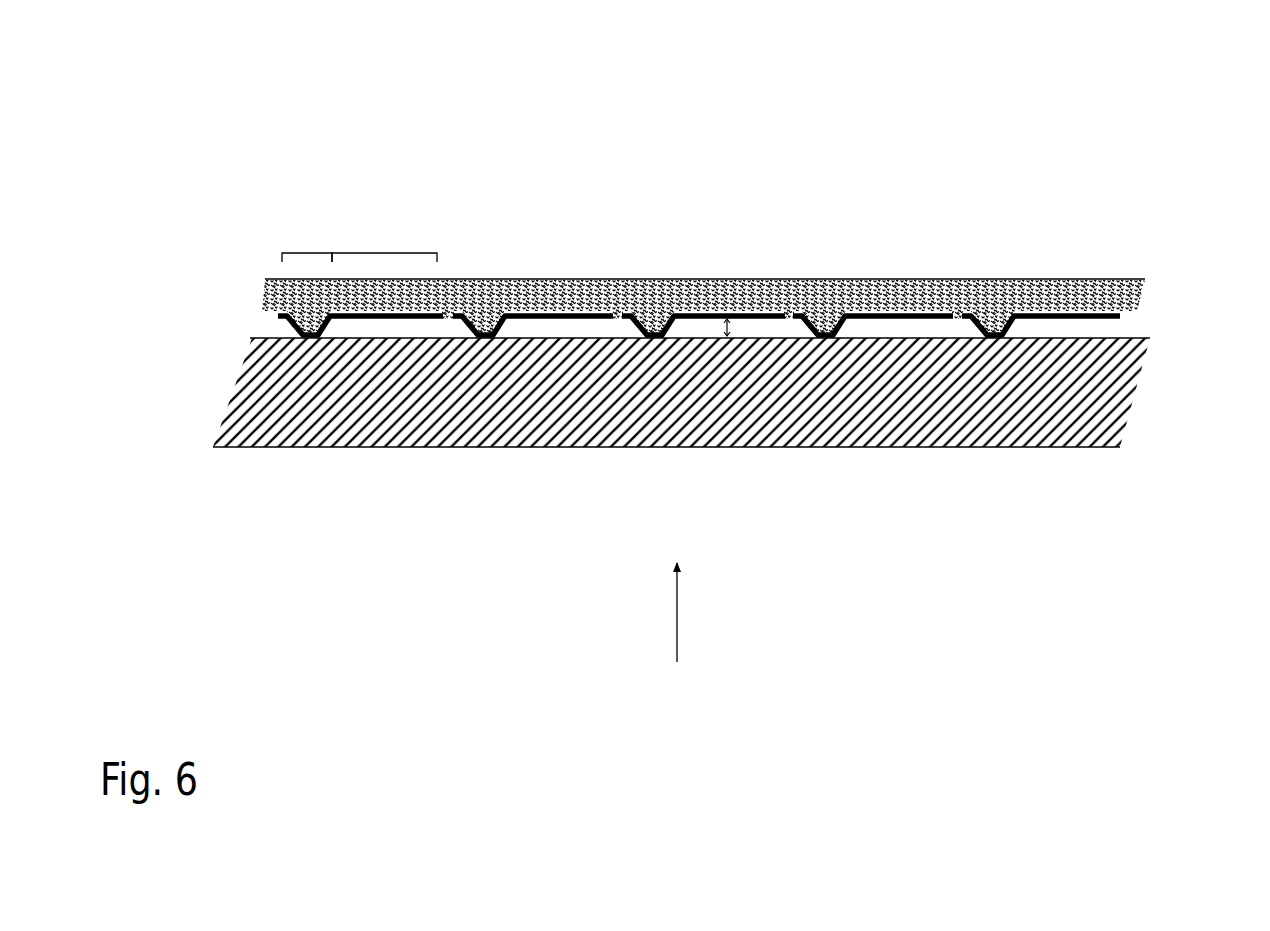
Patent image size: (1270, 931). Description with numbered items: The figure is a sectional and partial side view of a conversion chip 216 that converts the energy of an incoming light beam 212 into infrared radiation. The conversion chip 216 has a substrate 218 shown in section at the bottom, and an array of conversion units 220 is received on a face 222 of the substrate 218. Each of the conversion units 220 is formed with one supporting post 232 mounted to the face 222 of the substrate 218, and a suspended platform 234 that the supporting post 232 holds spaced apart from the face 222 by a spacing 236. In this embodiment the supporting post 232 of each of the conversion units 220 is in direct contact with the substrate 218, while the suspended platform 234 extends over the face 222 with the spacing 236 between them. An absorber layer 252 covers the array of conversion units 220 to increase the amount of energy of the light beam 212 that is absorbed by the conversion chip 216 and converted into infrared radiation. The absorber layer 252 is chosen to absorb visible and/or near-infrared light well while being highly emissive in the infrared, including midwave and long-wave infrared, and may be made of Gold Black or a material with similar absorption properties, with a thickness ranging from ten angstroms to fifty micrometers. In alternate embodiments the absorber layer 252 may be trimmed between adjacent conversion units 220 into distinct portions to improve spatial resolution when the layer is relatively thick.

The light beam 212 is at (677, 613).
The conversion chip 216 is at (1044, 125).
The substrate 218 is at (1115, 415).
The conversion units 220 is at (907, 310).
The face of the substrate 222 is at (1133, 335).
The supporting post 232 is at (307, 253).
The suspended platform 234 is at (382, 253).
The spacing 236 is at (723, 327).
The absorber layer 252 is at (1088, 288).